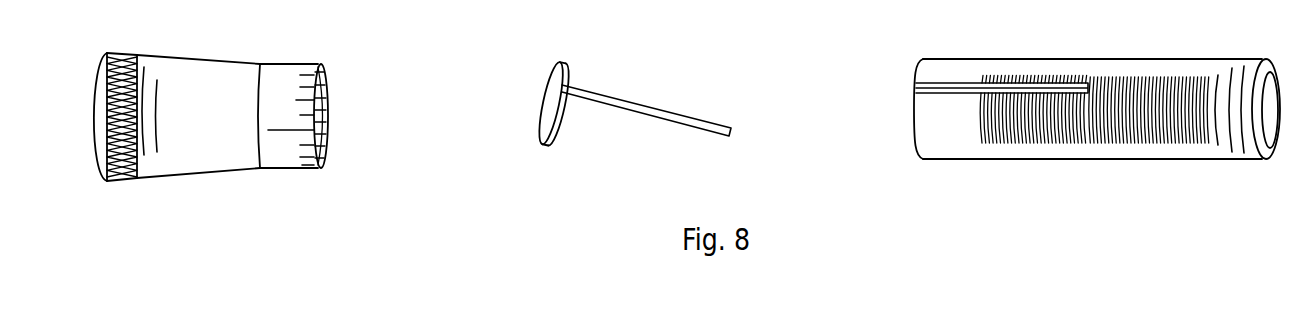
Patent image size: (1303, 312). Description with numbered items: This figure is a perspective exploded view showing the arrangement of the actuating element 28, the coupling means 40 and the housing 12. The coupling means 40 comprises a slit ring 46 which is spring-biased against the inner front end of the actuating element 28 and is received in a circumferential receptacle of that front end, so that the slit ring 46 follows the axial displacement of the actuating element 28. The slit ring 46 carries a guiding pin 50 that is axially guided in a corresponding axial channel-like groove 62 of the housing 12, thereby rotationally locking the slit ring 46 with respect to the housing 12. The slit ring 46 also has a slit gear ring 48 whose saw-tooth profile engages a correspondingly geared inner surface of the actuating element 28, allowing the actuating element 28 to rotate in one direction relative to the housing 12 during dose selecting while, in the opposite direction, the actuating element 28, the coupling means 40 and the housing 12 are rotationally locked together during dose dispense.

The housing 12 is at (1097, 79).
The actuating element 28 is at (194, 76).
The coupling means 40 is at (603, 76).
The slit ring 46 is at (566, 64).
The slit gear ring 48 is at (541, 118).
The guiding pin 50 is at (711, 118).
The axial channel-like groove 62 is at (946, 83).